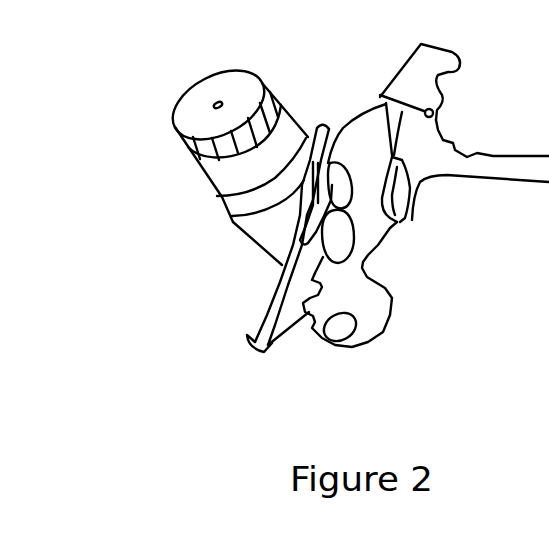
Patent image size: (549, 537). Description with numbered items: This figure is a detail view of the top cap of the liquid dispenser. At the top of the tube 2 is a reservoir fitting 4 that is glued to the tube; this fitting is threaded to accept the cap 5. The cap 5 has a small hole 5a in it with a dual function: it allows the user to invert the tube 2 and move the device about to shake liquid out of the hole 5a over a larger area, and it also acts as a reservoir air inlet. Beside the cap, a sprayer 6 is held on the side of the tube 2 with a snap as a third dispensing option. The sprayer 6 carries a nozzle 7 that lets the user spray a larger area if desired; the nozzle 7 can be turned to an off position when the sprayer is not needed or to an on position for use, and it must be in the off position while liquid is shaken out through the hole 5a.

The tube 2 is at (249, 247).
The reservoir fitting 4 is at (230, 213).
The cap 5 is at (200, 143).
The small hole 5a is at (216, 105).
The sprayer 6 is at (373, 225).
The nozzle 7 is at (422, 65).